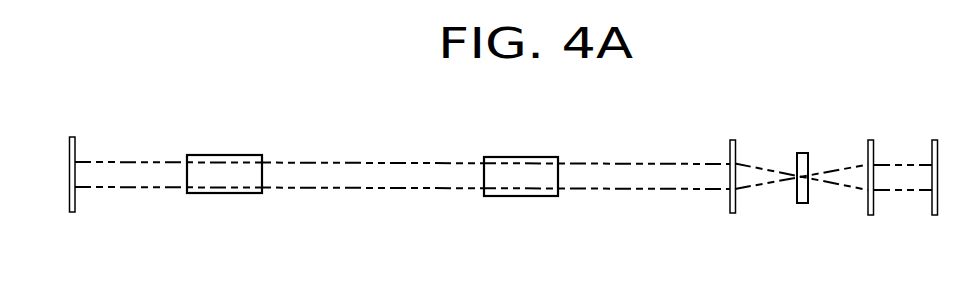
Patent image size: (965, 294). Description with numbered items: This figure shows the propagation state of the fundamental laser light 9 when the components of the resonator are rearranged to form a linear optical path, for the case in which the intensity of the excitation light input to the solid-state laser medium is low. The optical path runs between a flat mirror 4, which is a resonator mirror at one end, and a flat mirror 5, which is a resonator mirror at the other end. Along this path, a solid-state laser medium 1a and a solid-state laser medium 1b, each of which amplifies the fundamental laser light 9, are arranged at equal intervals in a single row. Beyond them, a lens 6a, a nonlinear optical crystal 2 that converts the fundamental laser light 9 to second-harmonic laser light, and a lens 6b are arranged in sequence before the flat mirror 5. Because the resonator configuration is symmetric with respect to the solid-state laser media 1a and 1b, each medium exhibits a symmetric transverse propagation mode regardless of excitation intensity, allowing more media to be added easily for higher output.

The solid-state laser medium 1a is at (217, 155).
The solid-state laser medium 1b is at (518, 157).
The nonlinear optical crystal 2 is at (805, 153).
The flat mirror 4 is at (68, 213).
The flat mirror 5 is at (935, 215).
The lens 6a is at (733, 213).
The lens 6b is at (872, 215).
The fundamental laser light 9 is at (352, 189).